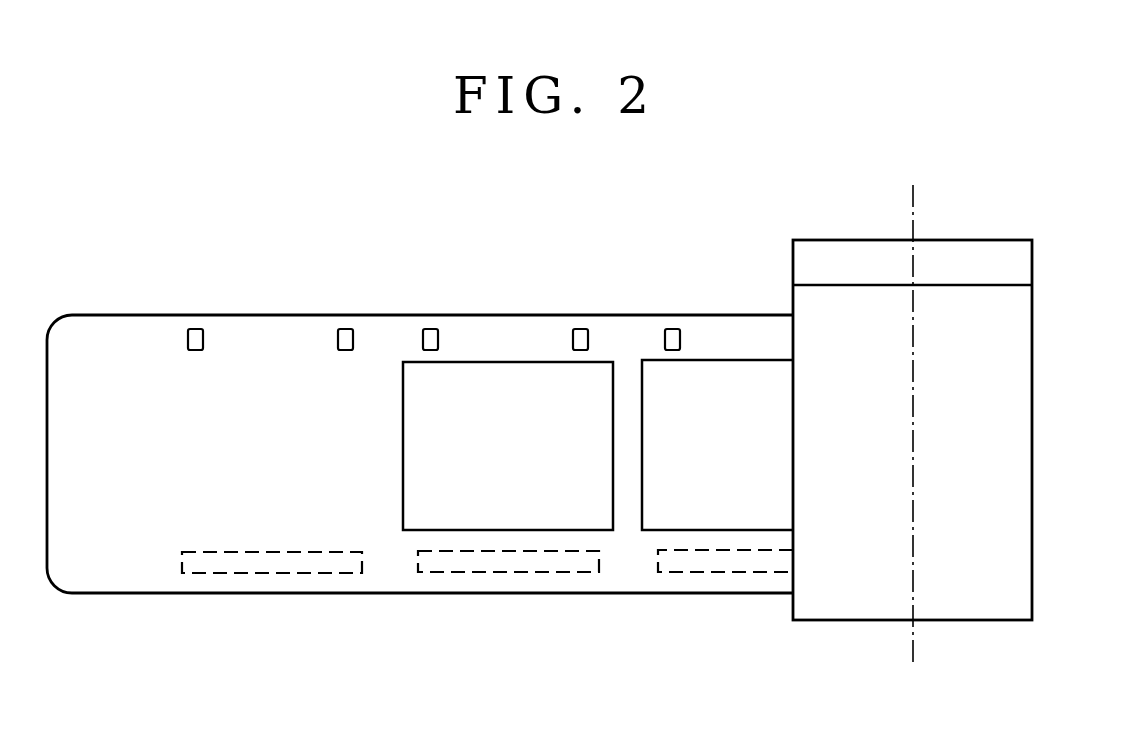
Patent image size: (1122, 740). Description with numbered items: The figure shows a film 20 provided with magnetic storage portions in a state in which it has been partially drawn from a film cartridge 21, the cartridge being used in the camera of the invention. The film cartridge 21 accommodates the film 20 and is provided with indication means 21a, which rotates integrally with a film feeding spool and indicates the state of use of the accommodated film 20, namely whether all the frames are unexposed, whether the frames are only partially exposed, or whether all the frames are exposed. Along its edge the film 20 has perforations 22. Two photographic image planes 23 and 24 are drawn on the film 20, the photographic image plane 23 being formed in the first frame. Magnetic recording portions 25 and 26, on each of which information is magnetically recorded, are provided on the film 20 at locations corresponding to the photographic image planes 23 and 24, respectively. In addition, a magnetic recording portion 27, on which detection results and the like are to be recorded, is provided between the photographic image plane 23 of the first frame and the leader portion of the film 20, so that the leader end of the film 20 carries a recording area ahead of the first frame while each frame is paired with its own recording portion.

The film 20 is at (109, 346).
The film cartridge 21 is at (1020, 388).
The indication means 21a is at (993, 240).
The perforations 22 is at (198, 330).
The photographic image plane 23 is at (508, 375).
The photographic image plane 24 is at (723, 375).
The magnetic recording portion 25 is at (525, 572).
The magnetic recording portion 26 is at (725, 572).
The magnetic recording portion 27 is at (288, 573).